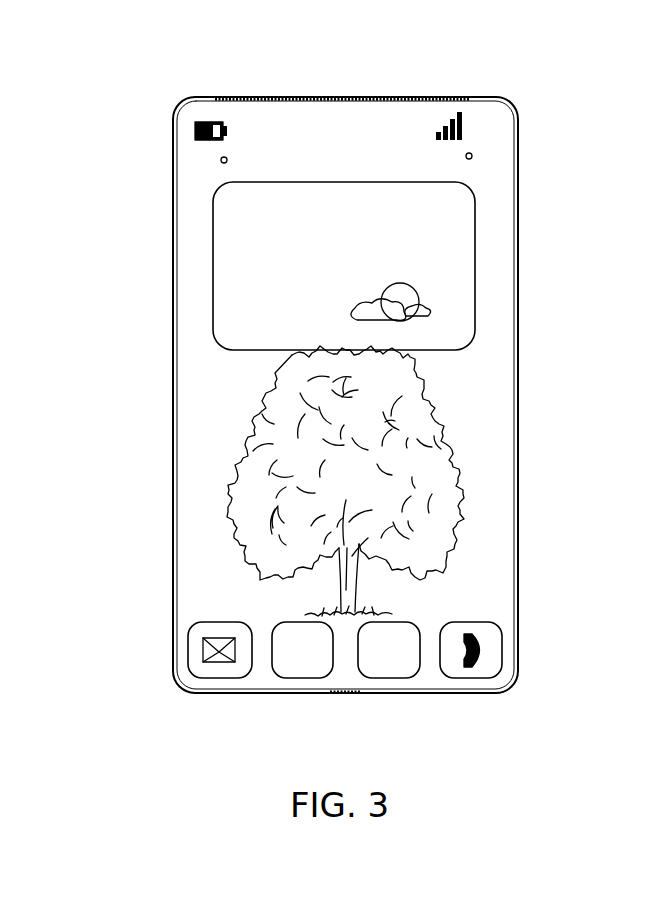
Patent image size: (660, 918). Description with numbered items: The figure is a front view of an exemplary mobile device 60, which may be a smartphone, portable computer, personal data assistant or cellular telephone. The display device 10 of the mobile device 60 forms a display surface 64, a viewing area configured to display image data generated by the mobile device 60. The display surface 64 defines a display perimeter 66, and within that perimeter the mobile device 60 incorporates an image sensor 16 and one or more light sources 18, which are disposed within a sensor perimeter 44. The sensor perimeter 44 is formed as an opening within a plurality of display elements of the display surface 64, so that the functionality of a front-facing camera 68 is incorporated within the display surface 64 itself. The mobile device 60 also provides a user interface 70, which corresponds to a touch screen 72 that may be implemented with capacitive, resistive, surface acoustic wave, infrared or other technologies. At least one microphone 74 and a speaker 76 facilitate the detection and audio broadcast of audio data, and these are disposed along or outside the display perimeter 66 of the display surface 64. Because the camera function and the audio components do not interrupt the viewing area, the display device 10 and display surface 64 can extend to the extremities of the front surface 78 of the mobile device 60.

The mobile device 60 is at (143, 96).
The display perimeter 66 is at (173, 562).
The speaker 76 is at (375, 98).
The display surface 64 is at (338, 231).
The display device 10 is at (338, 231).
The front-facing camera 68 is at (469, 156).
The image sensor 16 is at (221, 161).
The light source 18 is at (472, 157).
The sensor perimeter 44 is at (338, 170).
The front surface 78 is at (418, 477).
The touch screen 72 is at (485, 483).
The user interface 70 is at (284, 678).
The microphone 74 is at (343, 693).